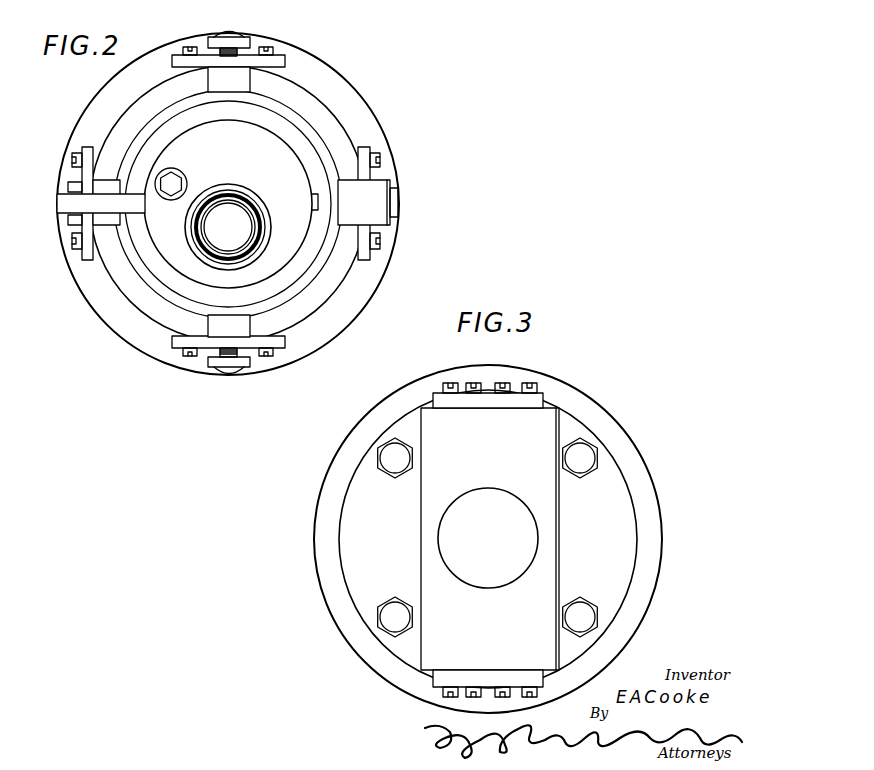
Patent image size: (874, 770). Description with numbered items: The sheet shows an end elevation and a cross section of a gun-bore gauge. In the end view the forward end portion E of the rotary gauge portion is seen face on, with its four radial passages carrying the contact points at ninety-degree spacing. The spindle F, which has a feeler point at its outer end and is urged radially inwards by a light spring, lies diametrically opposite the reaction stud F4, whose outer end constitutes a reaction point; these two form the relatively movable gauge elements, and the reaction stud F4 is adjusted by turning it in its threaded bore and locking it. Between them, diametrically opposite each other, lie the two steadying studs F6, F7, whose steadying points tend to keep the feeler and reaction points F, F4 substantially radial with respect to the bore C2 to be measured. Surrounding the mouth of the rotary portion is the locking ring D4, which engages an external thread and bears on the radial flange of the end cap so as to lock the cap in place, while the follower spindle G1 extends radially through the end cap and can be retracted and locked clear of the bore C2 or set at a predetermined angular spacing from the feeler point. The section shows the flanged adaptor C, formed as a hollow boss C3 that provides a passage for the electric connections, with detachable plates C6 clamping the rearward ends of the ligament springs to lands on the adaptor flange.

In FIG. 3, the flanged adaptor C is at (573, 430).
In FIG. 2, the bore C2 is at (362, 113).
In FIG. 3, the bore C2 is at (578, 405).
In FIG. 3, the hollow boss C3 is at (523, 540).
In FIG. 3, the detachable plates C6 is at (498, 398).
In FIG. 2, the locking ring D4 is at (173, 130).
In FIG. 2, the forward end portion E is at (247, 137).
In FIG. 2, the spindle F is at (399, 204).
In FIG. 2, the reaction stud F4 is at (74, 187).
In FIG. 2, the steadying stud F6 is at (236, 33).
In FIG. 2, the steadying stud F7 is at (241, 368).
In FIG. 2, the follower spindle G1 is at (70, 208).